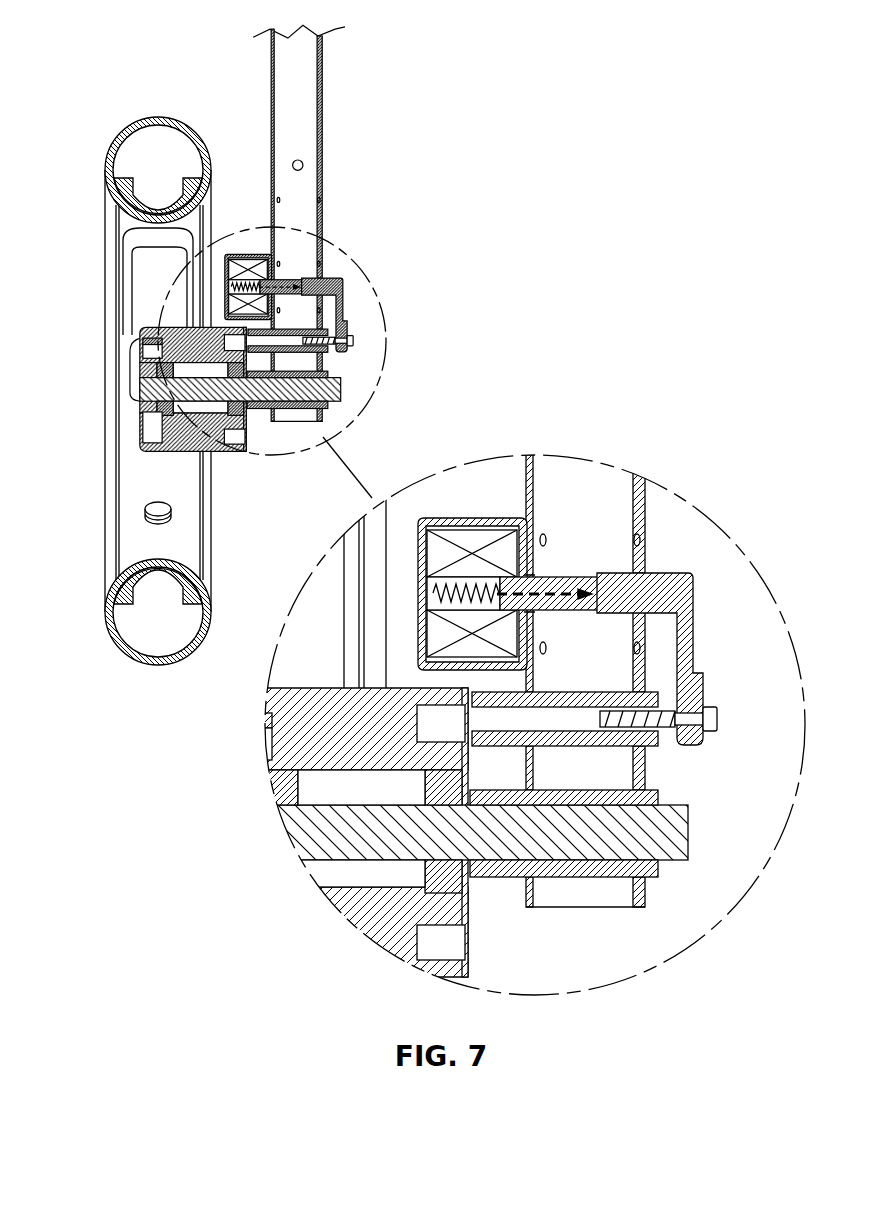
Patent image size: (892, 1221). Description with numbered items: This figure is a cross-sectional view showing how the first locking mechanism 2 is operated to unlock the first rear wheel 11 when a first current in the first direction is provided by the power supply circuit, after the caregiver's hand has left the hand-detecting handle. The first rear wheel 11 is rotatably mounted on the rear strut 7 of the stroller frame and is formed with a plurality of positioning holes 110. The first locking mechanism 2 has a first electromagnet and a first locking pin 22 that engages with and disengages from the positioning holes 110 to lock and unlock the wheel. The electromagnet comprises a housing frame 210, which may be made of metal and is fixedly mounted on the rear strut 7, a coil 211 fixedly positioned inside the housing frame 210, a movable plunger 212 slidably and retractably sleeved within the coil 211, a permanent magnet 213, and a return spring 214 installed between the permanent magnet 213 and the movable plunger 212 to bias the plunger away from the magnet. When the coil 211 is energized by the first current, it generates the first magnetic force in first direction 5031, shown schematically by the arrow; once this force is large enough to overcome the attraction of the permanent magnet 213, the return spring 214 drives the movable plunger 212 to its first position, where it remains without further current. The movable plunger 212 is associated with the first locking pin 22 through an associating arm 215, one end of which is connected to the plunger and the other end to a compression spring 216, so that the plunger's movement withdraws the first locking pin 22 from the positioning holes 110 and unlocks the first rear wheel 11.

The first locking mechanism 2 is at (683, 893).
The rear strut 7 is at (591, 489).
The first rear wheel 11 is at (147, 138).
The first locking pin 22 is at (557, 720).
The positioning holes 110 is at (442, 722).
The housing frame 210 is at (420, 548).
The coil 211 is at (490, 543).
The movable plunger 212 is at (612, 600).
The permanent magnet 213 is at (423, 595).
The return spring 214 is at (440, 578).
The associating arm 215 is at (680, 657).
The compression spring 216 is at (670, 723).
The first magnetic force in first direction 5031 is at (545, 577).